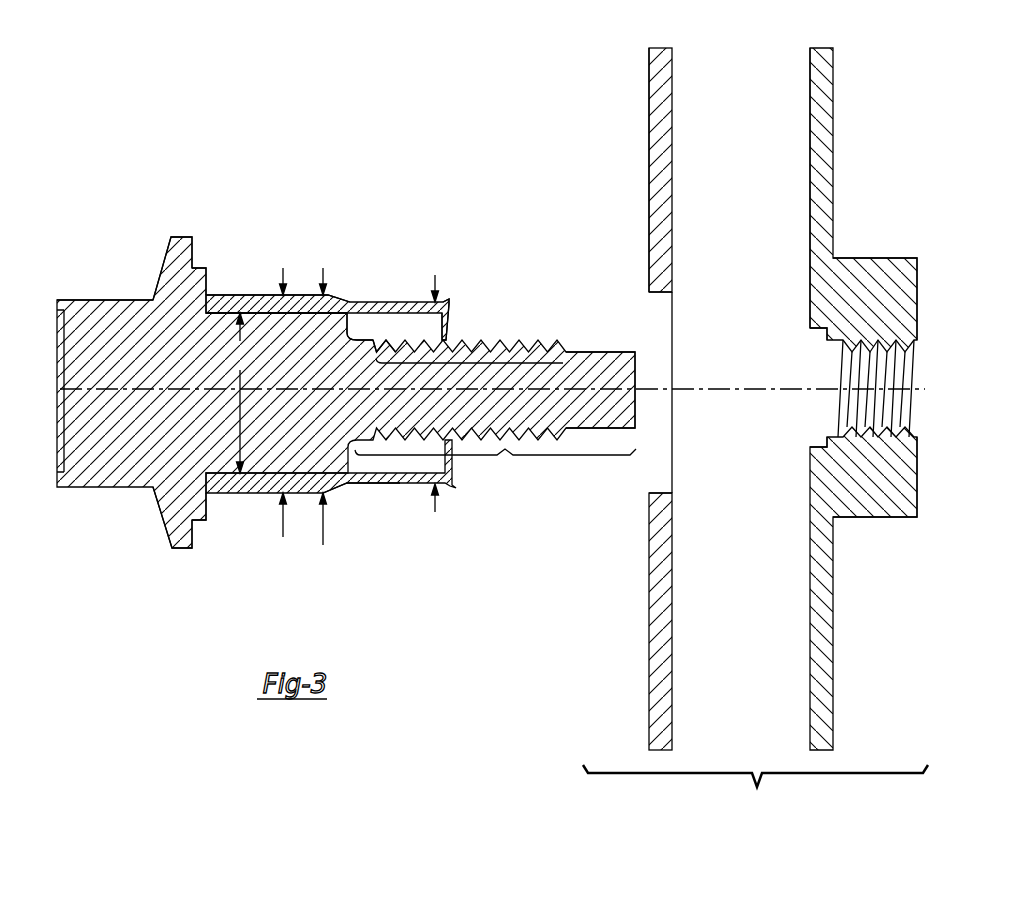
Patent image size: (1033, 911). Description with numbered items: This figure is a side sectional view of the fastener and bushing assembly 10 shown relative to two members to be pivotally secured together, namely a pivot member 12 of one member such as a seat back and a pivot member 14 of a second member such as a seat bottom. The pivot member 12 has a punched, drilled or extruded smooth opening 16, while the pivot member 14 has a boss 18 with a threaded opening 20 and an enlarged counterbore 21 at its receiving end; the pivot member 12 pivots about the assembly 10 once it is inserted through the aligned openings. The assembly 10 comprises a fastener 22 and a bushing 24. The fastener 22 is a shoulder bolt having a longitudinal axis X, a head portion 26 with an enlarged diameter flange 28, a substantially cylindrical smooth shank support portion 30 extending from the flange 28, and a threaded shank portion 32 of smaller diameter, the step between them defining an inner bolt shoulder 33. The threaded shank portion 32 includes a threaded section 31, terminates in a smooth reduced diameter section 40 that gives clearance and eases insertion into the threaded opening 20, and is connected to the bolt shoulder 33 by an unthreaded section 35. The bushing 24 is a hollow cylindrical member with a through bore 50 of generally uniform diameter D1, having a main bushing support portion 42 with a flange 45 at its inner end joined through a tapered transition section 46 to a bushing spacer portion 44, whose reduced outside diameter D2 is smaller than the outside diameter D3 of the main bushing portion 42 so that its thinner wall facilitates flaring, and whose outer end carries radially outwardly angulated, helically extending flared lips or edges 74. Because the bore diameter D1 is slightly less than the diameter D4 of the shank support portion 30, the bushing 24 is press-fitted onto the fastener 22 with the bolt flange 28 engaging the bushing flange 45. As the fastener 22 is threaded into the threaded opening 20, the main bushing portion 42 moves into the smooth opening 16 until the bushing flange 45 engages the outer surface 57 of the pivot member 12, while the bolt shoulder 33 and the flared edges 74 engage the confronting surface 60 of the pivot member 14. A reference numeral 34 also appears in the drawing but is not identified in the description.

The fastener and bushing assembly 10 is at (102, 192).
The pivot member 12 is at (640, 54).
The pivot member 14 is at (846, 50).
The smooth opening 16 is at (672, 293).
The boss 18 is at (862, 262).
The threaded opening 20 is at (856, 435).
The enlarged counterbore 21 is at (811, 333).
The fastener 22 is at (129, 499).
The bushing 24 is at (266, 283).
The head portion 26 is at (103, 447).
The enlarged diameter flange 28 is at (171, 237).
The shank support portion 30 is at (303, 328).
The threaded section 31 is at (469, 375).
The threaded shank portion 32 is at (495, 466).
The inner bolt shoulder 33 is at (350, 333).
The end portion of body 34 is at (103, 299).
The unthreaded section 35 is at (378, 343).
The reduced diameter section 40 is at (563, 352).
The main bushing support portion 42 is at (236, 298).
The bushing spacer portion 44 is at (383, 485).
The bushing flange 45 is at (206, 267).
The tapered transition section 46 is at (340, 489).
The through bore 50 is at (218, 316).
The outer surface 57 is at (650, 125).
The confronting surface 60 is at (812, 130).
The flared lips or edges 74 is at (449, 304).
The bore diameter D1 is at (243, 393).
The spacer portion outside diameter D2 is at (432, 405).
The main bushing portion outside diameter D3 is at (327, 419).
The shank support portion diameter D4 is at (283, 414).
The longitudinal axis X is at (90, 389).